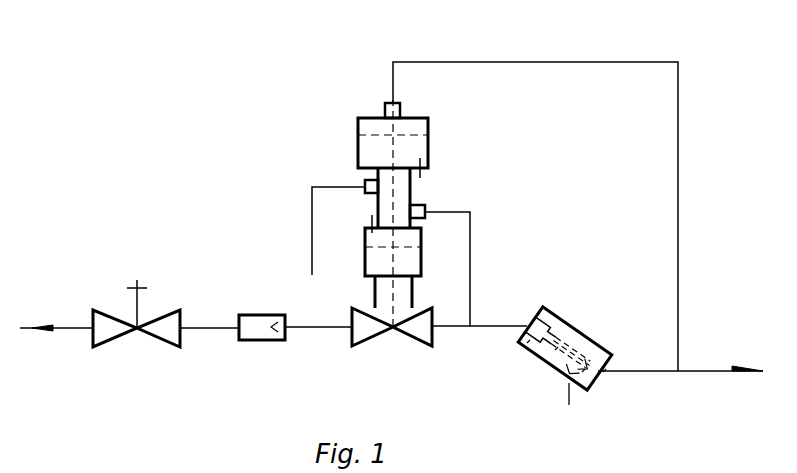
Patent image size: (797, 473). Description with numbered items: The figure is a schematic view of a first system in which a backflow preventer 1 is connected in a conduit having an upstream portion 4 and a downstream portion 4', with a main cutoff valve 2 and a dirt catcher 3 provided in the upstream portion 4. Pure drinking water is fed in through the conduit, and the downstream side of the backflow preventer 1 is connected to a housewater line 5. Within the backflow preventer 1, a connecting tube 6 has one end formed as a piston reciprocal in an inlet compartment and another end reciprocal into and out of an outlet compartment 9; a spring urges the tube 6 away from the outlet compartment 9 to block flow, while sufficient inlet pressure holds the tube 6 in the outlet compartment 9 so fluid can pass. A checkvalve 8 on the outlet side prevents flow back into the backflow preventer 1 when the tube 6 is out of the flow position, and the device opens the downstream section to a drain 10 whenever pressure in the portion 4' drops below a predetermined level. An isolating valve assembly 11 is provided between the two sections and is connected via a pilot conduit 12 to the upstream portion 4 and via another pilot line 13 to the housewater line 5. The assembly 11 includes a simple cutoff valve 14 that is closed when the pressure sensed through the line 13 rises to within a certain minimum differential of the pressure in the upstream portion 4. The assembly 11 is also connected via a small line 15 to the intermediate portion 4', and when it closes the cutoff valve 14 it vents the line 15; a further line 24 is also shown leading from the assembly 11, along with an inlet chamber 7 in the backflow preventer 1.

The backflow preventer 1 is at (582, 322).
The main cutoff valve 2 is at (160, 332).
The dirt catcher 3 is at (265, 332).
The upstream portion 4 is at (186, 363).
The downstream portion 4' is at (479, 358).
The housewater line 5 is at (648, 373).
The connecting tube 6 is at (555, 350).
The inlet chamber 7 is at (527, 343).
The checkvalve 8 is at (603, 372).
The outlet compartment 9 is at (582, 372).
The drain 10 is at (568, 393).
The isolating valve assembly 11 is at (433, 178).
The pilot conduit 12 is at (392, 312).
The pilot line 13 is at (540, 62).
The cutoff valve 14 is at (415, 327).
The small line 15 is at (470, 258).
The vent line 24 is at (312, 228).